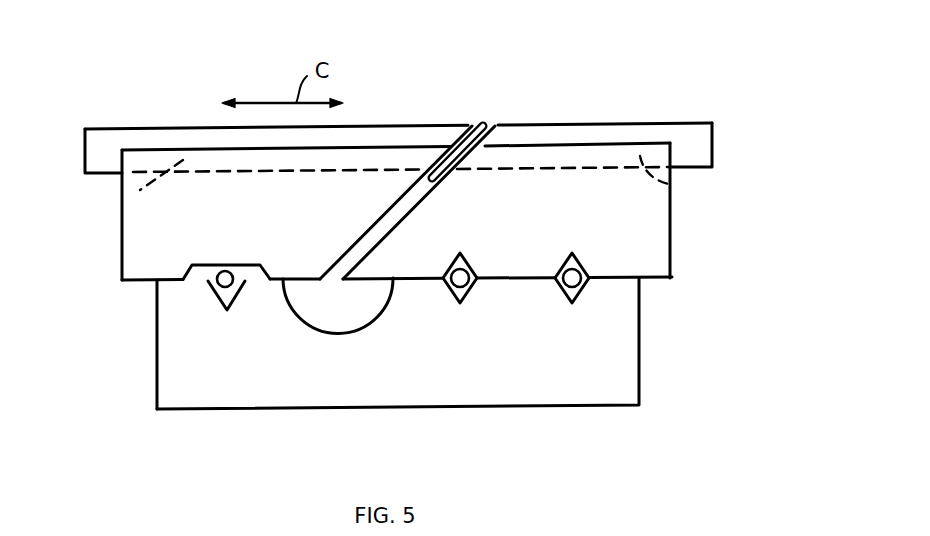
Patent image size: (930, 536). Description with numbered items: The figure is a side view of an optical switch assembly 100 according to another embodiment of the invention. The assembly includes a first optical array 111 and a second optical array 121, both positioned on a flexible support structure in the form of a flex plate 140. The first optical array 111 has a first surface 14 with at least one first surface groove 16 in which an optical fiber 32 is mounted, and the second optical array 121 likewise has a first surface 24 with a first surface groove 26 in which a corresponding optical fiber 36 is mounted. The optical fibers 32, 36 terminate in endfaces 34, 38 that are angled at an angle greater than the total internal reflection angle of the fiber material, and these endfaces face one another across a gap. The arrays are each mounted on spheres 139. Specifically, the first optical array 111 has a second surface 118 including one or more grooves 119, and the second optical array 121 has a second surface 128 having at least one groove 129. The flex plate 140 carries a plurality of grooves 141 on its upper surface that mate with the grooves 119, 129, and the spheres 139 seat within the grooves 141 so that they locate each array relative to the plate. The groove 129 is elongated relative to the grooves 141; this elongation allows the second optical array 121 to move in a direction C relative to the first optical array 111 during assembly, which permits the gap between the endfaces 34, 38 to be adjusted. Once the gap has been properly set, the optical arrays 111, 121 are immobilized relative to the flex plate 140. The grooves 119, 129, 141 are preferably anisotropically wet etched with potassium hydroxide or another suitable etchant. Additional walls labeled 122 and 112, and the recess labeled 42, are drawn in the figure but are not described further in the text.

The optical switch assembly 100 is at (720, 65).
The first surface 24 is at (172, 148).
The optical fiber 36 is at (100, 140).
The optical fiber 32 is at (703, 148).
The first surface 14 is at (533, 143).
The left side wall 122 is at (135, 213).
The right side wall 112 is at (648, 208).
The first surface groove 26 is at (118, 192).
The first surface groove 16 is at (690, 183).
The endface 38 is at (448, 128).
The endface 34 is at (492, 123).
The second optical array 121 is at (348, 168).
The first optical array 111 is at (573, 163).
The second surface 118 is at (662, 282).
The groove 129 is at (190, 273).
The spheres 139 is at (230, 273).
The grooves 141 is at (227, 302).
The grooves 119 is at (569, 256).
The recess 42 is at (333, 308).
The second surface 128 is at (137, 287).
The flex plate 140 is at (592, 390).